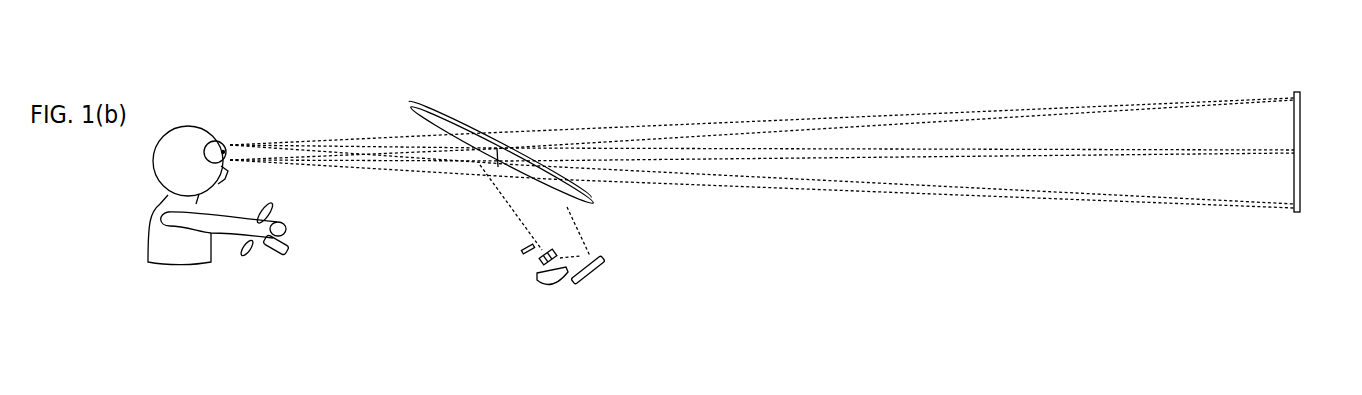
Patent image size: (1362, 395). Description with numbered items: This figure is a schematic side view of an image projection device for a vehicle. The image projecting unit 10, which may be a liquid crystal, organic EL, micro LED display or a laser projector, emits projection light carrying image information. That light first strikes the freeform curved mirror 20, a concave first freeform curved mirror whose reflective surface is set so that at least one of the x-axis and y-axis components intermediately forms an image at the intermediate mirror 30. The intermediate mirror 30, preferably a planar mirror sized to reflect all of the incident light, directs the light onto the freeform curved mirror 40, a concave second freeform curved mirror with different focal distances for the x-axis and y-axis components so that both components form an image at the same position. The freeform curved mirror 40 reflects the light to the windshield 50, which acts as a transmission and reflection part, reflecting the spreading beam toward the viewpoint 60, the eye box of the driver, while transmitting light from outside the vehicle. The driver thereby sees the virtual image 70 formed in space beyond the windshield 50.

The image projecting unit 10 is at (524, 248).
The freeform curved mirror 20 is at (550, 283).
The intermediate mirror 30 is at (550, 250).
The freeform curved mirror 40 is at (593, 268).
The windshield 50 is at (462, 123).
The viewpoint 60 is at (195, 123).
The virtual image 70 is at (1302, 128).